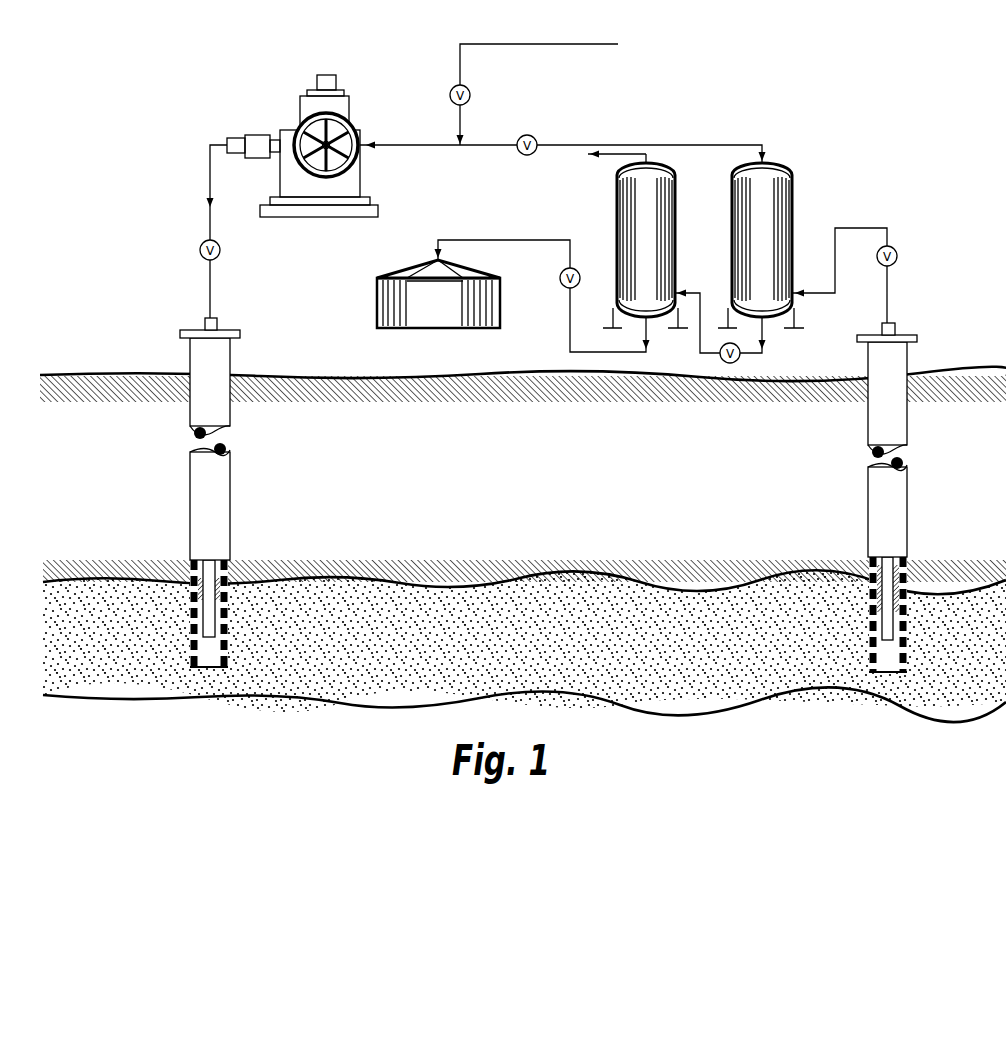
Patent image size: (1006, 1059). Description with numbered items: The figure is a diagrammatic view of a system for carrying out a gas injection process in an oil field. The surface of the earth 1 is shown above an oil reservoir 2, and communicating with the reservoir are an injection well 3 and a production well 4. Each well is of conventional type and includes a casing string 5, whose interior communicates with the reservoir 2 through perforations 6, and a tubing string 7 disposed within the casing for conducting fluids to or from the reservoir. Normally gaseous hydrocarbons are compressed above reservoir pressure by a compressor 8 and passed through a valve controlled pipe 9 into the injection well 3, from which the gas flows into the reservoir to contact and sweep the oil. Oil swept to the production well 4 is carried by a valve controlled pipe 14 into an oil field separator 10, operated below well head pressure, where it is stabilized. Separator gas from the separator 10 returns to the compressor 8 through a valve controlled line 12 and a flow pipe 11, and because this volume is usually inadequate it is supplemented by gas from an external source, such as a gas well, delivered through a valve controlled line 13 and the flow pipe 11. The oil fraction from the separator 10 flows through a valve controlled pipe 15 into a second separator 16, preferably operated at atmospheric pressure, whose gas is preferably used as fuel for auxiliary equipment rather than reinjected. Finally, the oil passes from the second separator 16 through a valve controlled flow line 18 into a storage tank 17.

The surface of the earth 1 is at (294, 374).
The oil reservoir 2 is at (372, 696).
The injection well 3 is at (190, 488).
The production well 4 is at (910, 492).
The casing string 5 is at (218, 560).
The perforations 6 is at (226, 640).
The tubing string 7 is at (208, 565).
The compressor 8 is at (360, 188).
The valve controlled pipe 9 is at (210, 178).
The oil field separator 10 is at (793, 178).
The flow pipe 11 is at (413, 143).
The valve controlled line 12 is at (707, 146).
The valve controlled line 13 is at (461, 66).
The valve controlled pipe 14 is at (888, 292).
The valve controlled pipe 15 is at (699, 352).
The second separator 16 is at (617, 223).
The storage tank 17 is at (377, 303).
The valve controlled flow line 18 is at (570, 328).